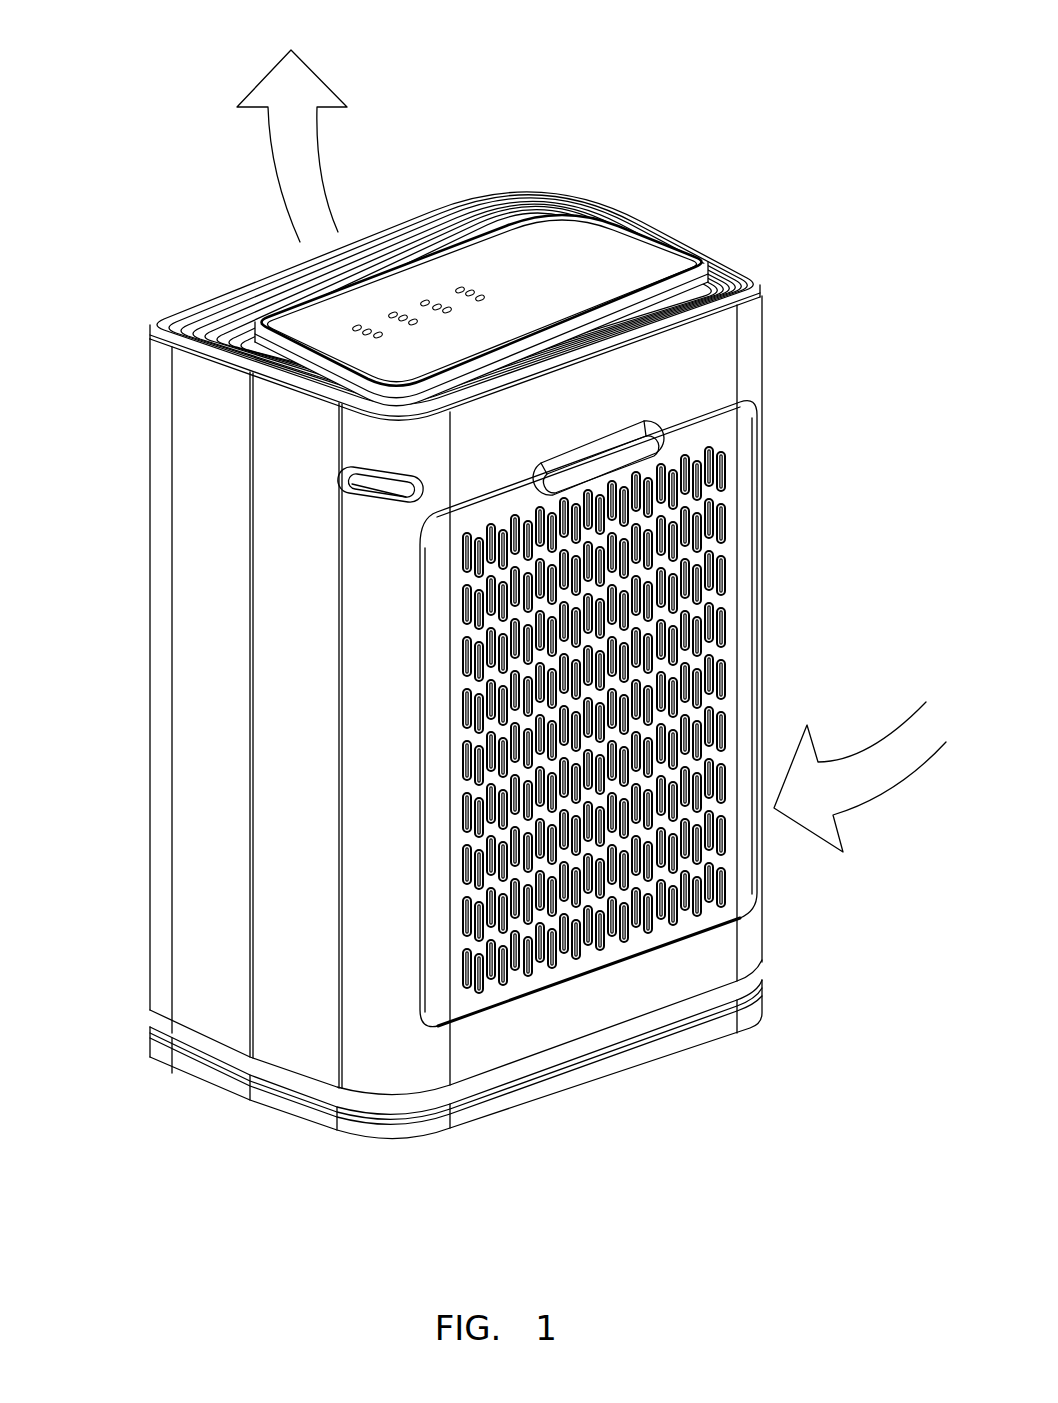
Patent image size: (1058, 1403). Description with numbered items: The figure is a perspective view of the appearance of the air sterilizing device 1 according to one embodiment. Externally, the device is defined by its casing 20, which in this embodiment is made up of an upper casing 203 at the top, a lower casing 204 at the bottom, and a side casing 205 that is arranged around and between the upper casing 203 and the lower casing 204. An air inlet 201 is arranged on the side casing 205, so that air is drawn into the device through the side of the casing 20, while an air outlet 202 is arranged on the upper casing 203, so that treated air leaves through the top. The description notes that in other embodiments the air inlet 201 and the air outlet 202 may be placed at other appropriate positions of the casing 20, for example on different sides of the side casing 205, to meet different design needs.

The air sterilizing device 1 is at (843, 42).
The casing 20 is at (152, 321).
The air inlet 201 is at (700, 637).
The air outlet 202 is at (240, 280).
The upper casing 203 is at (593, 250).
The lower casing 204 is at (595, 1090).
The side casing 205 is at (690, 360).